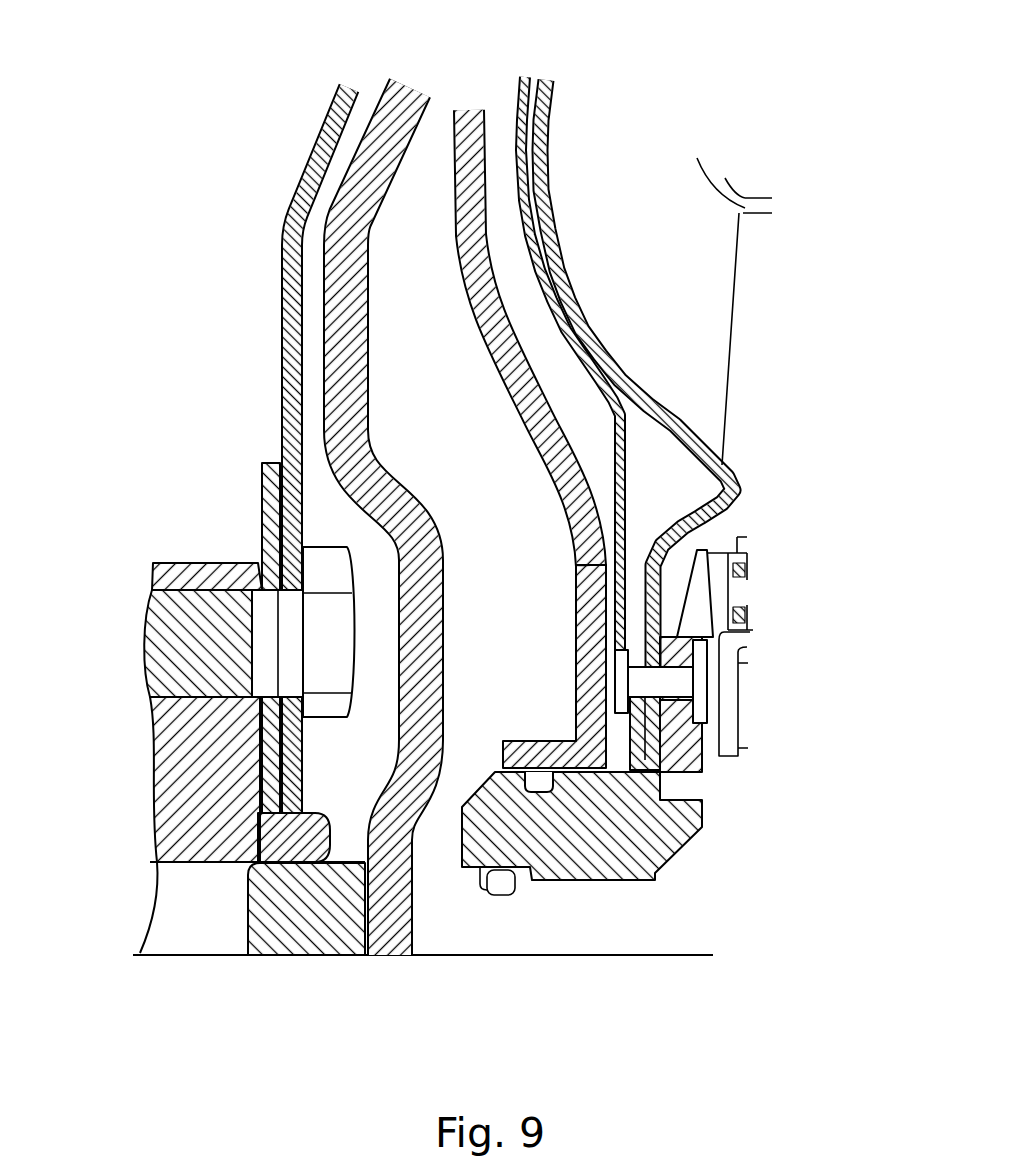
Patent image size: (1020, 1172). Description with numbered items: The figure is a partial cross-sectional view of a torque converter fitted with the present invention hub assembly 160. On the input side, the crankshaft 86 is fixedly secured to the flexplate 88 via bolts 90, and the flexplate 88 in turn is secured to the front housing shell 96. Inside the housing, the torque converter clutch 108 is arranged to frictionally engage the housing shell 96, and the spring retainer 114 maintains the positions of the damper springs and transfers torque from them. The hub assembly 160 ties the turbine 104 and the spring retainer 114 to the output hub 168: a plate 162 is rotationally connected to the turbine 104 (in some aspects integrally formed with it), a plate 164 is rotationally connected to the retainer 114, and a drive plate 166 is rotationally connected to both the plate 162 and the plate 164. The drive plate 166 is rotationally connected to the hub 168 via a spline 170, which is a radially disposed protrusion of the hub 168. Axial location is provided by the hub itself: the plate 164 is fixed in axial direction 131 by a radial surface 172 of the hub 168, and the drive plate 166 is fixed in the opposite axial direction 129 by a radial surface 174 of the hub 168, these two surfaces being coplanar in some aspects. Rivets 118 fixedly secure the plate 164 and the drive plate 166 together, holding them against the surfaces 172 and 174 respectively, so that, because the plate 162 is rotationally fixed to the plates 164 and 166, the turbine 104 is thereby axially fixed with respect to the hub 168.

The crankshaft 86 is at (195, 790).
The flexplate 88 is at (282, 338).
The bolts 90 is at (173, 643).
The front housing shell 96 is at (367, 168).
The turbine 104 is at (554, 167).
The torque converter clutch 108 is at (456, 258).
The spring retainer 114 is at (540, 90).
The rivets 118 is at (697, 580).
The axial direction 129 is at (737, 1040).
The axial direction 131 is at (818, 1008).
The hub assembly 160 is at (780, 607).
The plate 162 is at (672, 680).
The plate 164 is at (603, 562).
The drive plate 166 is at (700, 740).
The hub 168 is at (395, 930).
The spline 170 is at (700, 786).
The radial surface 172 is at (652, 776).
The radial surface 174 is at (700, 800).